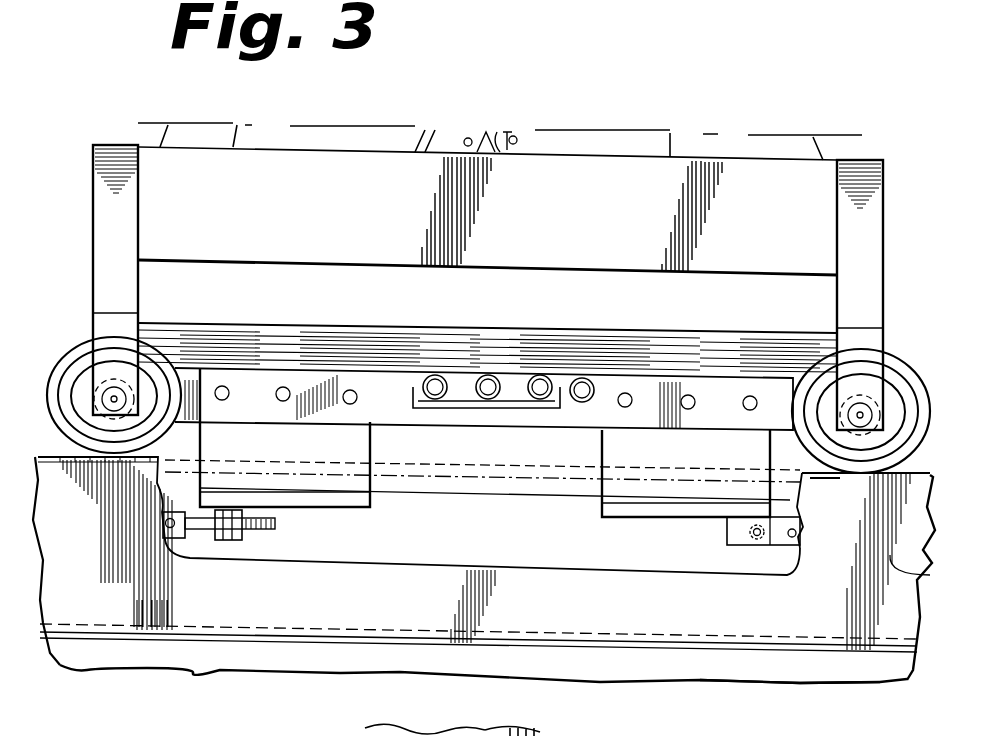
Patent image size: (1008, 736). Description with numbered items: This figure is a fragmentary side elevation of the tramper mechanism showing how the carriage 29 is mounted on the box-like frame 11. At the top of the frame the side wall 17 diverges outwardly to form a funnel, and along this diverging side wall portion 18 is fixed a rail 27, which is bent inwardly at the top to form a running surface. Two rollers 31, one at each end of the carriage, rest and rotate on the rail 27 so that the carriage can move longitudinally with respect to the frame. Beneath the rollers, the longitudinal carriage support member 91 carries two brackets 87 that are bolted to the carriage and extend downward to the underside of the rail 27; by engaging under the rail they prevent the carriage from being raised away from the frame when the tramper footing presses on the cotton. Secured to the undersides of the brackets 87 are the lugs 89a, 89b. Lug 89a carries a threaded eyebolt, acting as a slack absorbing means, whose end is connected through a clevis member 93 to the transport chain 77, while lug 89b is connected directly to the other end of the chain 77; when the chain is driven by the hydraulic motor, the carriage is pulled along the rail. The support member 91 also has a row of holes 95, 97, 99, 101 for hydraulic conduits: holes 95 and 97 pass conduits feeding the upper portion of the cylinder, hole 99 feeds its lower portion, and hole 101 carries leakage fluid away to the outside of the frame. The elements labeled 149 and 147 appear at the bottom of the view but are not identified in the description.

The carriage 29 is at (616, 112).
The roller 31 is at (72, 350).
The longitudinal carriage support member 91 is at (718, 402).
The hole 95 is at (438, 400).
The hole 97 is at (488, 400).
The hole 99 is at (540, 400).
The hole 101 is at (582, 403).
The bracket 87 is at (372, 455).
The rail 27 is at (877, 492).
The diverging side wall portion 18 is at (495, 570).
The frame 11 is at (108, 650).
The clevis member 93 is at (176, 540).
The lug 89a is at (287, 600).
The lug 89b is at (737, 546).
The roller chain 77 is at (797, 546).
The side wall 17 is at (797, 672).
The lower element 149 is at (397, 723).
The lower element 147 is at (567, 724).